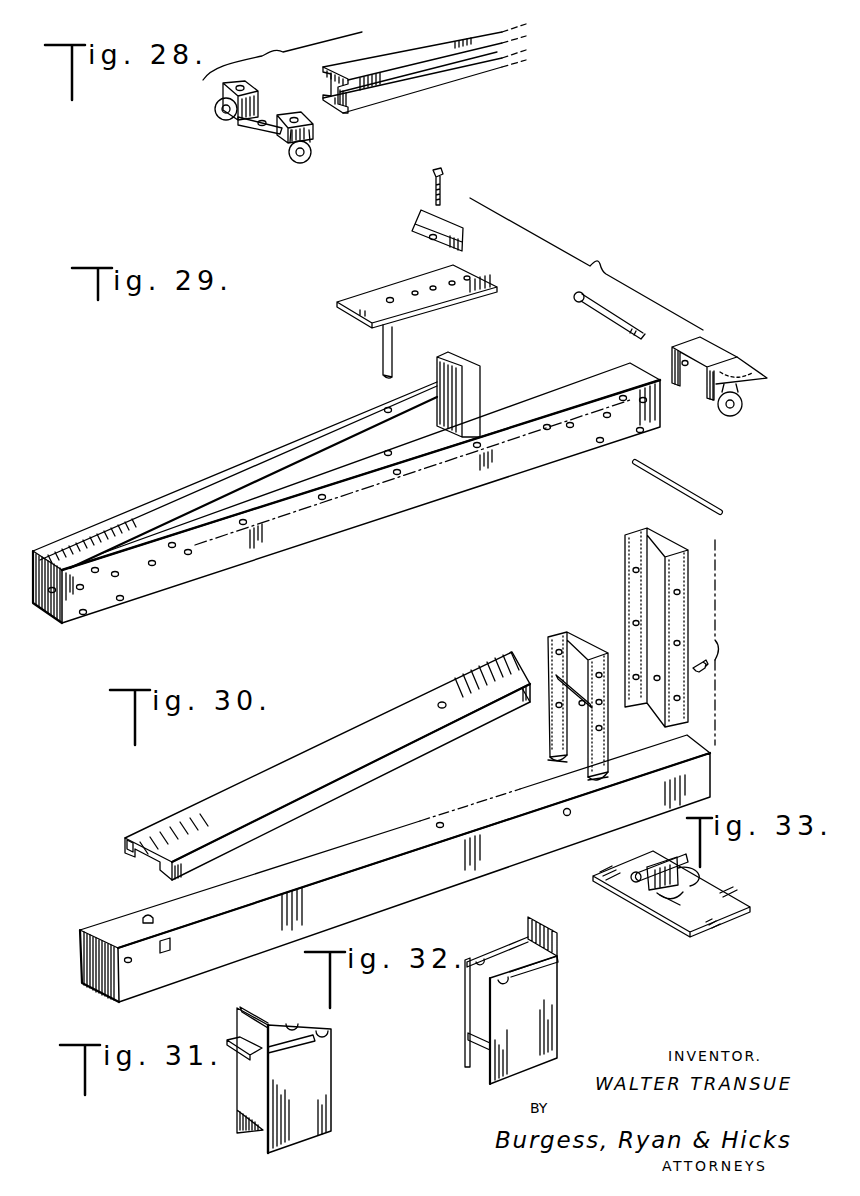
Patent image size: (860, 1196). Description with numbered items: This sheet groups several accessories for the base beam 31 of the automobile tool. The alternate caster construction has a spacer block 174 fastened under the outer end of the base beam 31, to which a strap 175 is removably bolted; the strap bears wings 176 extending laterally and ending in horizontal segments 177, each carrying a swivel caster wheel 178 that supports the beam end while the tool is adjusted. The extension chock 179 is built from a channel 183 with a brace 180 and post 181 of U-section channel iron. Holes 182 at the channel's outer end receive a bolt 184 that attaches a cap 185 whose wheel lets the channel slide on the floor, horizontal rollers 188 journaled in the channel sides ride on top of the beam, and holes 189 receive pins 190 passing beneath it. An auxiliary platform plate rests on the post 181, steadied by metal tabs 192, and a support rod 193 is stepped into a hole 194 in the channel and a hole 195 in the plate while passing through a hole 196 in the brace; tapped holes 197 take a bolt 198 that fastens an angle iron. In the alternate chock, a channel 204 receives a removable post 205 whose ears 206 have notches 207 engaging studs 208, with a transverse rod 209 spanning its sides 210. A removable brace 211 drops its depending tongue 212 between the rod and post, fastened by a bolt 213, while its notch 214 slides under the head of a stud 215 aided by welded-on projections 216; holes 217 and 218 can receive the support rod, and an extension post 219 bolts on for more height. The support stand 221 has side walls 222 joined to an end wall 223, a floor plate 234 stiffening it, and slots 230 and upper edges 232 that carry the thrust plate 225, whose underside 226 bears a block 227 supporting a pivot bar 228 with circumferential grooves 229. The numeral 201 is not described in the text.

In FIG. 28, the base beam 31 is at (433, 40).
In FIG. 28, the spacer block 174 is at (424, 86).
In FIG. 28, the strap 175 is at (262, 127).
In FIG. 28, the wings 176 is at (246, 102).
In FIG. 28, the horizontal segments 177 is at (221, 88).
In FIG. 28, the swivel caster wheel 178 is at (218, 114).
In FIG. 29, the extension chock 179 is at (291, 552).
In FIG. 29, the brace 180 is at (268, 462).
In FIG. 29, the post 181 is at (478, 386).
In FIG. 29, the holes 182 is at (645, 401).
In FIG. 29, the channel 183 is at (553, 396).
In FIG. 29, the bolt 184 is at (612, 320).
In FIG. 29, the cap 185 is at (733, 359).
In FIG. 29, the horizontal rollers 188 is at (171, 548).
In FIG. 29, the holes 189 is at (122, 600).
In FIG. 29, the pins 190 is at (717, 480).
In FIG. 29, the metal tabs 192 is at (470, 312).
In FIG. 29, the support rod 193 is at (396, 354).
In FIG. 29, the hole 194 is at (388, 456).
In FIG. 29, the hole 195 is at (389, 298).
In FIG. 29, the hole 196 is at (385, 409).
In FIG. 29, the tapped holes 197 is at (452, 281).
In FIG. 29, the bolt 198 is at (442, 188).
In FIG. 29, the holes 201 is at (188, 549).
In FIG. 30, the channel 204 is at (482, 805).
In FIG. 30, the removable post 205 is at (584, 683).
In FIG. 30, the ears 206 is at (552, 758).
In FIG. 30, the notches 207 is at (563, 762).
In FIG. 30, the studs 208 is at (568, 818).
In FIG. 30, the transverse rod 209 is at (565, 673).
In FIG. 30, the sides 210 is at (546, 655).
In FIG. 30, the removable brace 211 is at (327, 743).
In FIG. 30, the depending tongue 212 is at (537, 707).
In FIG. 30, the bolt 213 is at (704, 672).
In FIG. 30, the notch 214 is at (162, 838).
In FIG. 30, the stud 215 is at (148, 915).
In FIG. 30, the welded-on projections 216 is at (166, 952).
In FIG. 30, the hole 217 is at (442, 702).
In FIG. 30, the hole 218 is at (437, 826).
In FIG. 30, the extension post 219 is at (690, 566).
In FIG. 31, the support stand 221 is at (286, 1076).
In FIG. 32, the support stand 221 is at (517, 989).
In FIG. 31, the side walls 222 is at (248, 1136).
In FIG. 32, the side walls 222 is at (466, 1007).
In FIG. 31, the end wall 223 is at (250, 1092).
In FIG. 32, the end wall 223 is at (528, 940).
In FIG. 33, the thrust plate 225 is at (713, 925).
In FIG. 33, the underside 226 is at (682, 897).
In FIG. 33, the block 227 is at (648, 890).
In FIG. 33, the pivot bar 228 is at (663, 868).
In FIG. 33, the circumferential grooves 229 is at (647, 873).
In FIG. 31, the slots 230 is at (320, 1026).
In FIG. 32, the slots 230 is at (478, 960).
In FIG. 31, the upper edges 232 is at (277, 1009).
In FIG. 32, the upper edges 232 is at (487, 955).
In FIG. 32, the floor plate 234 is at (467, 1035).